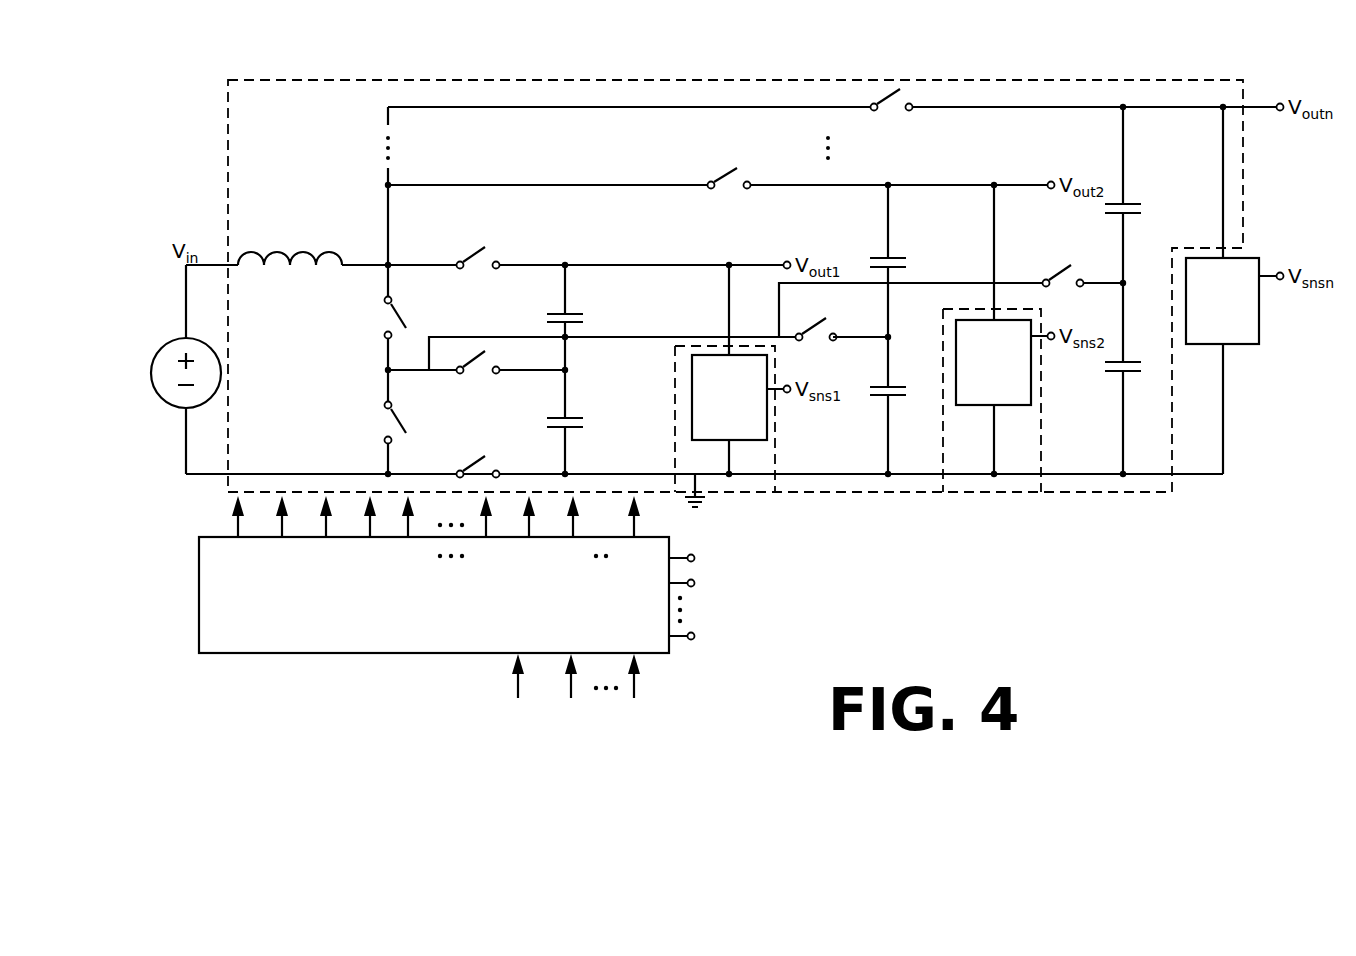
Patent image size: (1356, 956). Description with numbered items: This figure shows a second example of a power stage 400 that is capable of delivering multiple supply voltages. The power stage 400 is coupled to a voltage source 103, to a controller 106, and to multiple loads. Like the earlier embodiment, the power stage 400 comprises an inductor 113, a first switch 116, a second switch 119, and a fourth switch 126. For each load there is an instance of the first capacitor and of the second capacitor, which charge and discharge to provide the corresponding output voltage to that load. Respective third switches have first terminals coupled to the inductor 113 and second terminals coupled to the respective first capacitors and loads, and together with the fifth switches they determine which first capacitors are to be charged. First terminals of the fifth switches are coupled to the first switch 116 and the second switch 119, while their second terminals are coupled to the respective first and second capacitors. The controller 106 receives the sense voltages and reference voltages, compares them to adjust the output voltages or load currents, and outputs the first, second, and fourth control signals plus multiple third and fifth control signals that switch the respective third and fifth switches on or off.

The power stage 400 is at (358, 78).
The voltage source 103 is at (223, 387).
The inductor 113 is at (332, 258).
The first switch 116 is at (398, 318).
The second switch 119 is at (398, 421).
The fourth switch 126 is at (483, 462).
The controller 106 is at (471, 612).